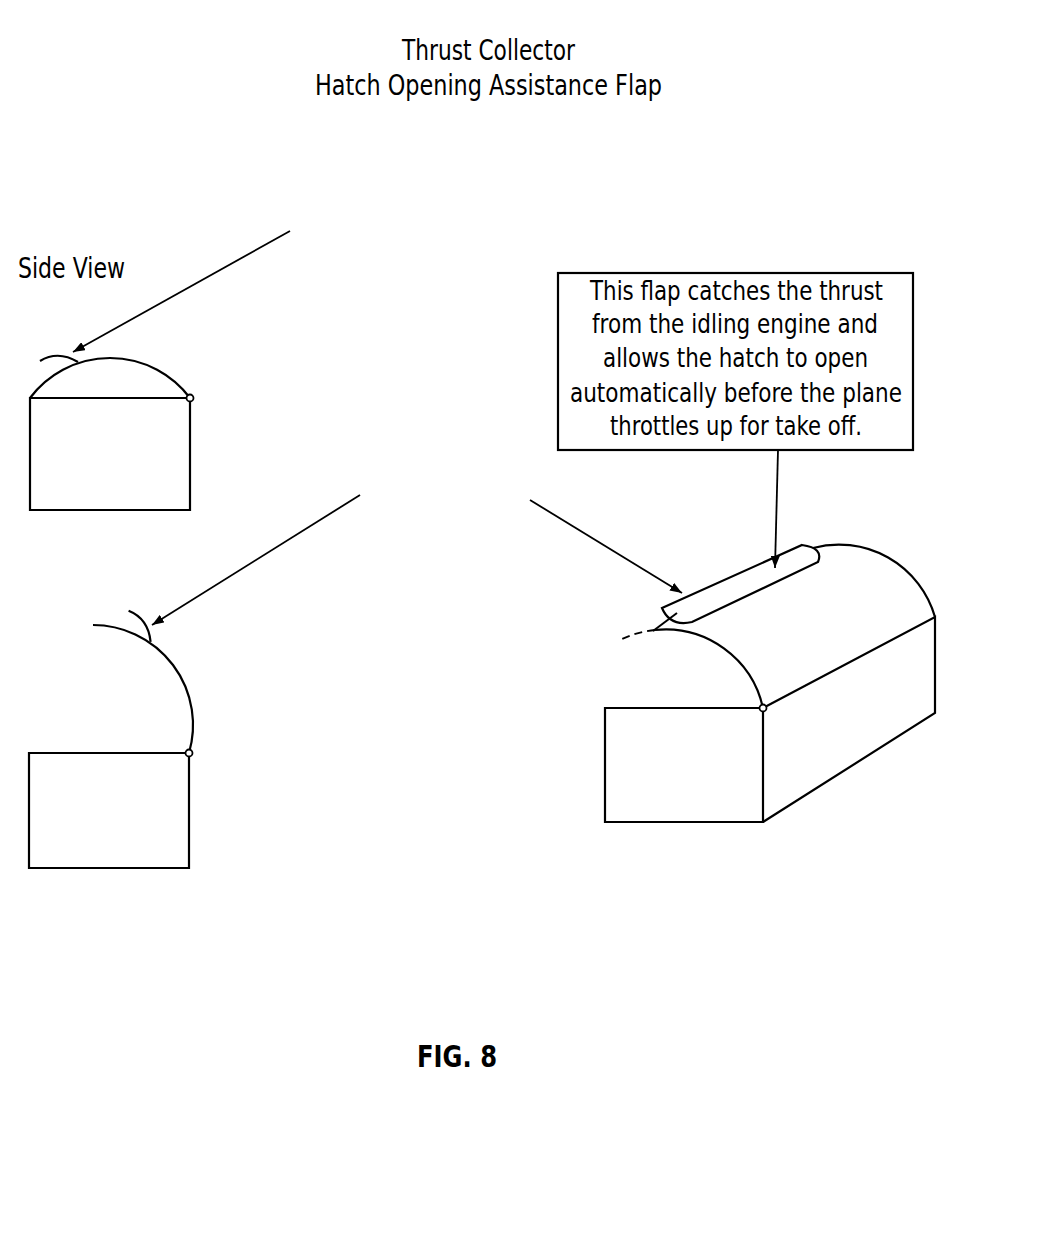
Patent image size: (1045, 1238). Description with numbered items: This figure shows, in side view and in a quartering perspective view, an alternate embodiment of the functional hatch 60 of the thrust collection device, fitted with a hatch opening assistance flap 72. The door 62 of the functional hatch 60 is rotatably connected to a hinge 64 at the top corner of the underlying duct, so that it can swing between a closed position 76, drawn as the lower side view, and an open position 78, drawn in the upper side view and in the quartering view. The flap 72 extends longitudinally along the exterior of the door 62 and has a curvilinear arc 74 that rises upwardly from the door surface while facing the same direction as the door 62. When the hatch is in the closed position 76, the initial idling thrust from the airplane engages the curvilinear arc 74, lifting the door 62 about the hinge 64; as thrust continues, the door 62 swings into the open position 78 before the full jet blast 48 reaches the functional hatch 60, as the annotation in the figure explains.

The jet blast 48 is at (172, 447).
The functional hatch 60 is at (482, 556).
The door 62 is at (114, 358).
The hinge 64 is at (193, 400).
The hatch opening assistance flap 72 is at (360, 208).
The curvilinear arc 74 is at (127, 620).
The closed position 76 is at (110, 547).
The open position 78 is at (117, 899).